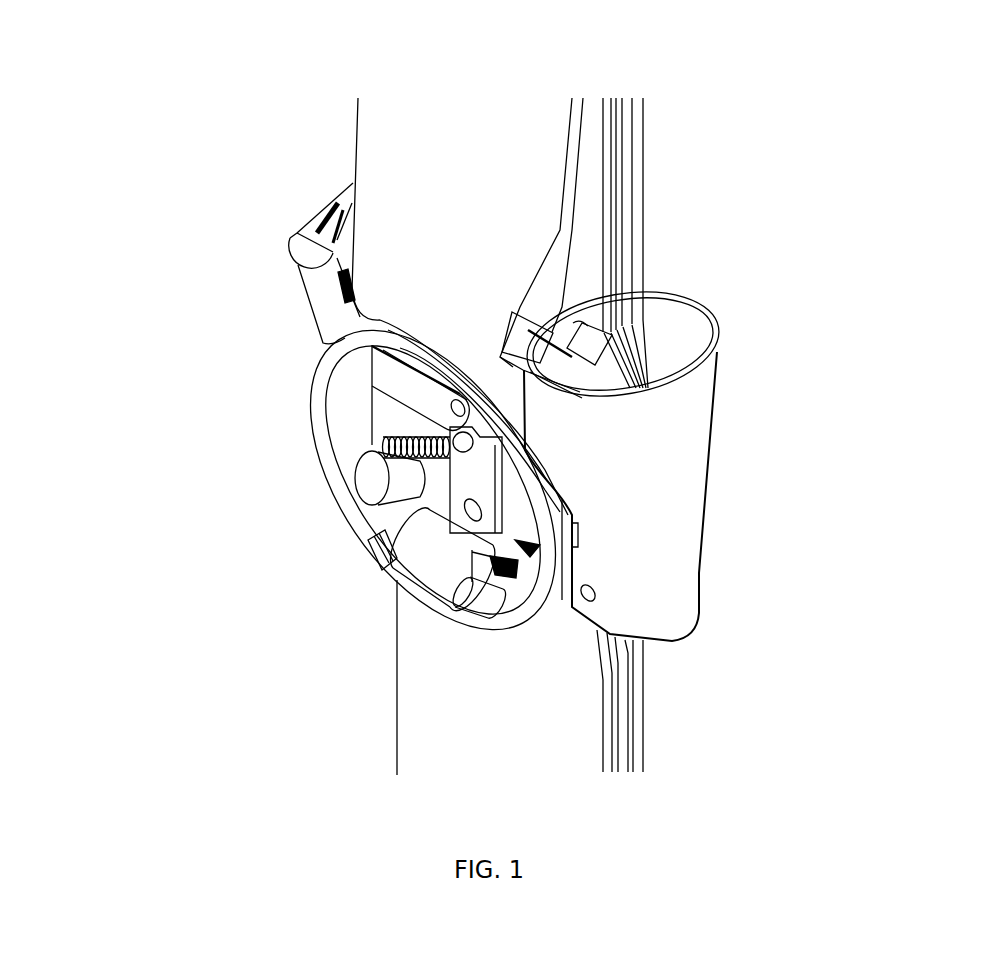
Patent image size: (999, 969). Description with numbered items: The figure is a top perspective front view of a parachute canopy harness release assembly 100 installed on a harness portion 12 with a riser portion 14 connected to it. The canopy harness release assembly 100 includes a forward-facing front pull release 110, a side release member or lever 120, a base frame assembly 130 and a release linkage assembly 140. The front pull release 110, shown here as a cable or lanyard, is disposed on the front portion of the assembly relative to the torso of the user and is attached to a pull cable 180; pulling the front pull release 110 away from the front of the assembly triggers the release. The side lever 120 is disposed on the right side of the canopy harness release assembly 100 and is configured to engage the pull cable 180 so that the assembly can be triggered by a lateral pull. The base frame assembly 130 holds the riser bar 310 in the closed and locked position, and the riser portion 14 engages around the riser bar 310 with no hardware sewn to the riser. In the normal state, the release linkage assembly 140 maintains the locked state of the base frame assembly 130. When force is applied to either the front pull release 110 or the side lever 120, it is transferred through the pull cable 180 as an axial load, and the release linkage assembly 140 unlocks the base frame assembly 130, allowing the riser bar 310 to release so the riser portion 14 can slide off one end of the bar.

The canopy harness release assembly 100 is at (888, 122).
The harness portion 12 is at (627, 727).
The riser portion 14 is at (422, 167).
The front pull release 110 is at (325, 470).
The side release member or lever 120 is at (697, 404).
The base frame assembly 130 is at (297, 267).
The release linkage assembly 140 is at (418, 405).
The pull cable 180 is at (487, 547).
The riser bar 310 is at (527, 338).